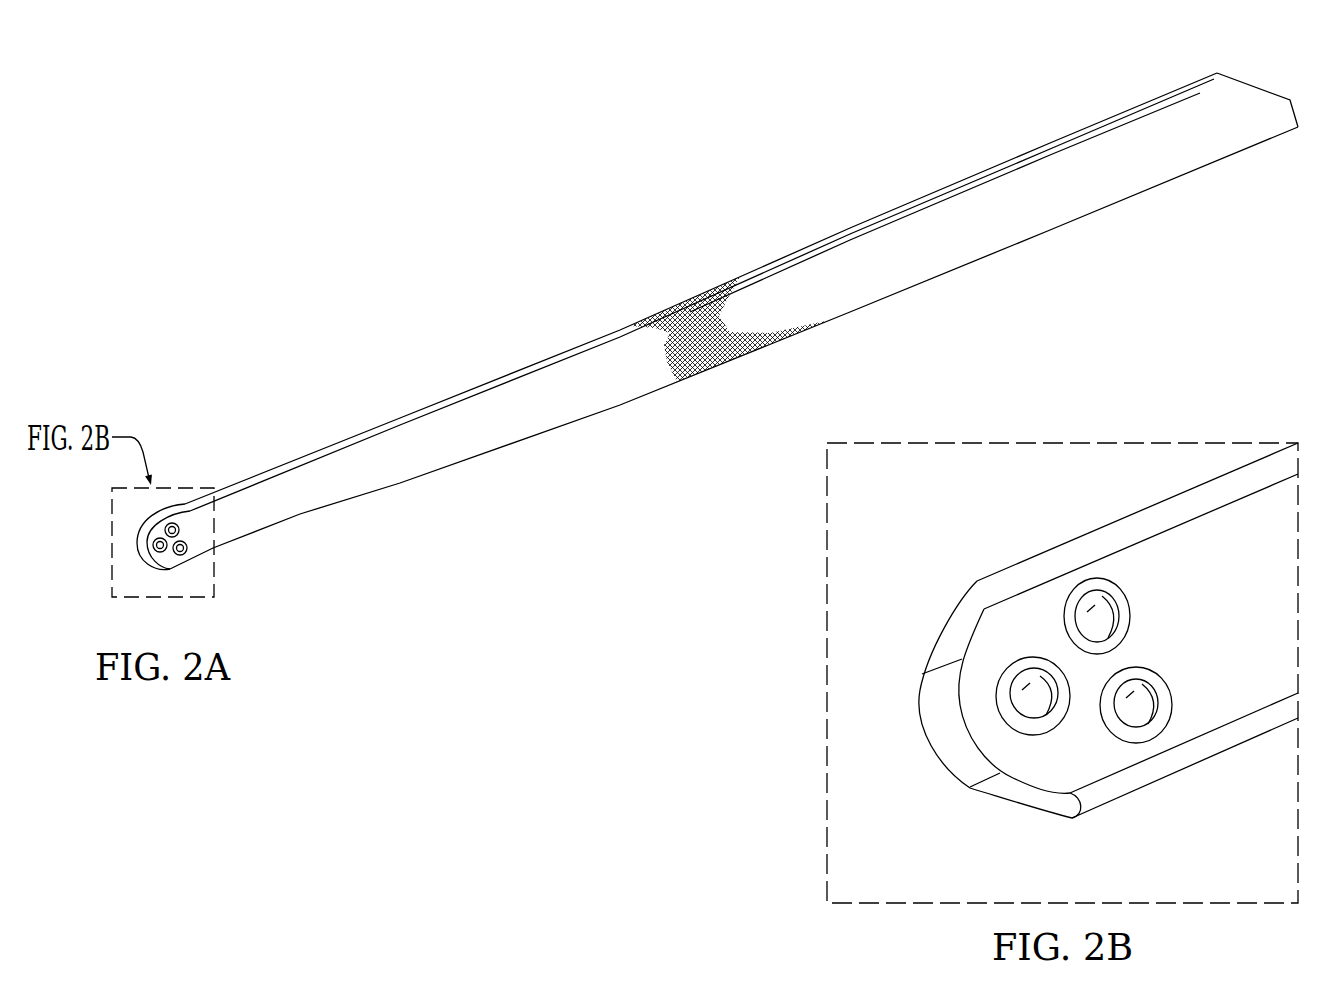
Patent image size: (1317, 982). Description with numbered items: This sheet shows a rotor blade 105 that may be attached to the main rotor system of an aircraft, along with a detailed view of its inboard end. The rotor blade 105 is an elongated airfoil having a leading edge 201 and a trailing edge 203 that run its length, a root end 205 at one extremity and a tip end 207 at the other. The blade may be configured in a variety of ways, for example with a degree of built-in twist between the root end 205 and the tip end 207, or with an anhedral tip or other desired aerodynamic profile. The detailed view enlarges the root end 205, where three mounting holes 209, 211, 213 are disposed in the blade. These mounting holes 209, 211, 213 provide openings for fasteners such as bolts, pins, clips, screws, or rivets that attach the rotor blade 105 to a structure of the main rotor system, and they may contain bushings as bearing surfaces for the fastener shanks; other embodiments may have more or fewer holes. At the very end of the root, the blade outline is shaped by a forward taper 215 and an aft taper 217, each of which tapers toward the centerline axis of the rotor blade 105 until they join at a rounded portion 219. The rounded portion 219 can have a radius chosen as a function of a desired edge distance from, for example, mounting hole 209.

In FIG. 2A, the rotor blade 105 is at (674, 316).
In FIG. 2A, the leading edge 201 is at (781, 259).
In FIG. 2A, the trailing edge 203 is at (1007, 248).
In FIG. 2A, the root end 205 is at (112, 540).
In FIG. 2B, the root end 205 is at (1078, 662).
In FIG. 2A, the tip end 207 is at (1264, 84).
In FIG. 2B, the mounting hole 209 is at (1040, 728).
In FIG. 2B, the mounting hole 211 is at (1130, 618).
In FIG. 2B, the mounting hole 213 is at (1172, 701).
In FIG. 2B, the forward taper 215 is at (956, 608).
In FIG. 2B, the aft taper 217 is at (1044, 812).
In FIG. 2B, the rounded portion 219 is at (936, 726).